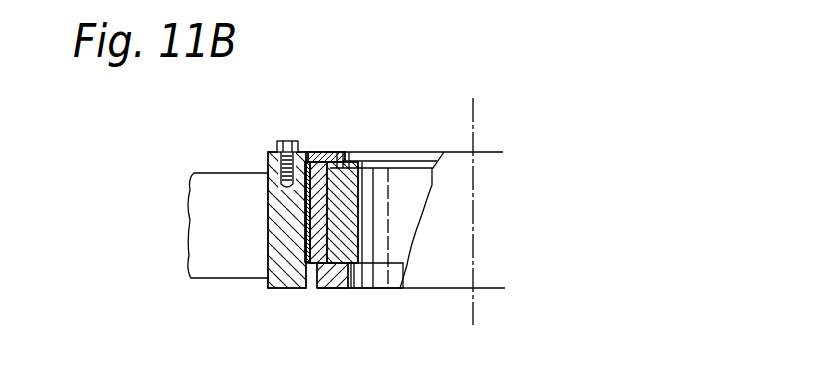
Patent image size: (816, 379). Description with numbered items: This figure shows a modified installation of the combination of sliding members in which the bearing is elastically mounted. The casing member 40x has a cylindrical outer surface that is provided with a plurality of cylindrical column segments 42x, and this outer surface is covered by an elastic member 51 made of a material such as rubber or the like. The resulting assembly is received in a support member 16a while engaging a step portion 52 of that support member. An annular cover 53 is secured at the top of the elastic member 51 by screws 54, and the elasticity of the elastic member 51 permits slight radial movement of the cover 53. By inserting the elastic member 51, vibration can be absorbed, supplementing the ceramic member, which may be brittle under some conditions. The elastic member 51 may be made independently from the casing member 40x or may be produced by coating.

The support member 16a is at (282, 262).
The annular cover 53 is at (266, 152).
The screws 54 is at (286, 141).
The elastic member 51 is at (322, 153).
The step portion 52 is at (307, 272).
The casing member 40x is at (338, 280).
The cylindrical column segments 42x is at (360, 190).